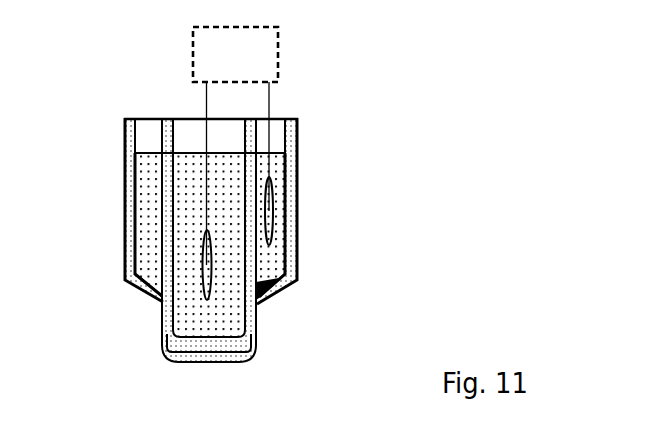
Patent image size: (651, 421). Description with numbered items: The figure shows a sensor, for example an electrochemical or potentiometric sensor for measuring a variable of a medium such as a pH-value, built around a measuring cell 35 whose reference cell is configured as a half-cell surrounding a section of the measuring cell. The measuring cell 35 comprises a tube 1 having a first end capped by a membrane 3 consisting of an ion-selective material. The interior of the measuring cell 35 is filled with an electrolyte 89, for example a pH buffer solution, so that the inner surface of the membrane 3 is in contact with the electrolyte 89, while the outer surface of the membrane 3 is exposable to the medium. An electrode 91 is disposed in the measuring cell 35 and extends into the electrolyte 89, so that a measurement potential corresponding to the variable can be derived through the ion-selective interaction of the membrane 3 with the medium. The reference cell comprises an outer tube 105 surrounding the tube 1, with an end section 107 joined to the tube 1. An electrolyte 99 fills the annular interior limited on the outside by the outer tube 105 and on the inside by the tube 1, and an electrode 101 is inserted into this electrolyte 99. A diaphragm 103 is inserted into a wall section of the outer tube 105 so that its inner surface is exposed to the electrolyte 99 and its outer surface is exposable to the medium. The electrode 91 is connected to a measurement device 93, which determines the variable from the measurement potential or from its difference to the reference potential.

The measurement device 93 is at (247, 62).
The electrolyte 89 is at (185, 213).
The outer tube 105 is at (130, 217).
The electrode 91 is at (203, 266).
The end section 107 is at (162, 298).
The electrode 101 is at (273, 212).
The electrolyte 99 is at (275, 255).
The diaphragm 103 is at (275, 296).
The tube 1 is at (253, 310).
The membrane 3 is at (230, 362).
The measuring cell 35 is at (261, 263).